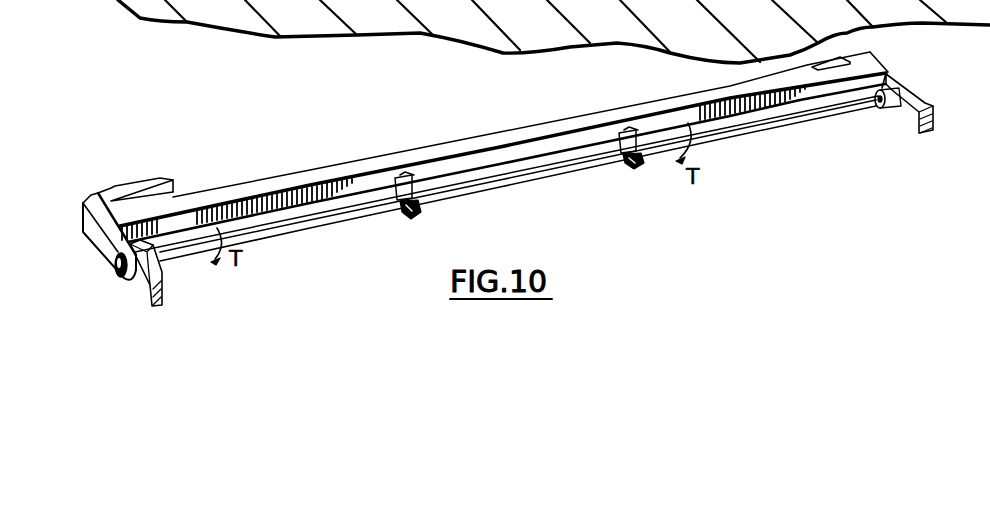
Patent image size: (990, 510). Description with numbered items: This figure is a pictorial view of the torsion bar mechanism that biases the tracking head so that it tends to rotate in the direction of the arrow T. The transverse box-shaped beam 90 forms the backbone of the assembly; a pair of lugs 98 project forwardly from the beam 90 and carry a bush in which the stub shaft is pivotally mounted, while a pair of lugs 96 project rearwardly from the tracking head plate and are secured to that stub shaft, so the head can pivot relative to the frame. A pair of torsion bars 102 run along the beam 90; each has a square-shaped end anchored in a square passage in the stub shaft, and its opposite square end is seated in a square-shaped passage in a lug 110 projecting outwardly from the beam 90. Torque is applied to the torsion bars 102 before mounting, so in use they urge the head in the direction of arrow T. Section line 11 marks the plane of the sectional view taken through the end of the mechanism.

The transverse box-shaped beam 90 is at (354, 167).
The lugs 96 is at (163, 288).
The lugs 98 is at (122, 278).
The torsion bars 102 is at (338, 222).
The lug 110 is at (411, 181).
The section line 11- 11 is at (155, 330).